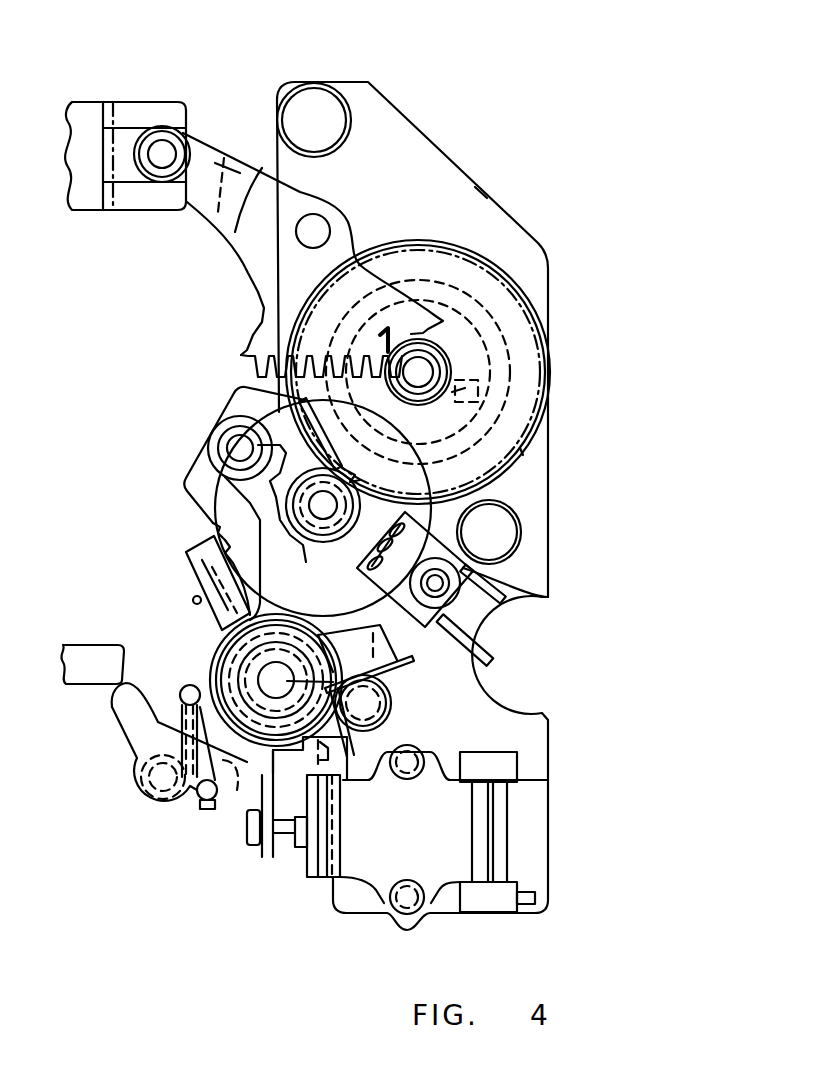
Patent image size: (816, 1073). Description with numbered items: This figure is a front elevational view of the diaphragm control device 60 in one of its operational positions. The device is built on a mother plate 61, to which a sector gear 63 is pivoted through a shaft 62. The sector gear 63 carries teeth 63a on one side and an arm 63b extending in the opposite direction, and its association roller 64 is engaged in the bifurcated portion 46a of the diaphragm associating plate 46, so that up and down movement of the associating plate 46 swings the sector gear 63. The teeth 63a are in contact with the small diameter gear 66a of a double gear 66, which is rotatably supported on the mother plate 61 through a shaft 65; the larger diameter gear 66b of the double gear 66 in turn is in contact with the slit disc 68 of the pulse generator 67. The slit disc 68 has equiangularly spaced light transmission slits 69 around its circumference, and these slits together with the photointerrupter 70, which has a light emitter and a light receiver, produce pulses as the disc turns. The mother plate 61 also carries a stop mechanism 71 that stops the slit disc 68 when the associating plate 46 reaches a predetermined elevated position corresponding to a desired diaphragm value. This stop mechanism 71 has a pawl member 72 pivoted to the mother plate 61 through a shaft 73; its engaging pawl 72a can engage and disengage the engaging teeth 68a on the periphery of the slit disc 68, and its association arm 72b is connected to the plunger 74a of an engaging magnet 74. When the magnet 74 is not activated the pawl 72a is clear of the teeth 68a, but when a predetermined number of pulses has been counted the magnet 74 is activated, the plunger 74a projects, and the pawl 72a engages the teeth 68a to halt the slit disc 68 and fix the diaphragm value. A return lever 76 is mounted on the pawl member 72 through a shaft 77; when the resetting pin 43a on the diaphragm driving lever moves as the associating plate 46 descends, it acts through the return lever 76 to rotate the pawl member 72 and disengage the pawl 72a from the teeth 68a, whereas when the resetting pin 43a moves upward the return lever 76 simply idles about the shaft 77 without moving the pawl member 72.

The diaphragm control mechanism resetting pin 43a is at (77, 641).
The diaphragm associating plate 46 is at (85, 210).
The bifurcated portion 46a is at (158, 202).
The diaphragm control device 60 is at (468, 148).
The mother plate 61 is at (487, 198).
The shaft 62 is at (318, 231).
The sector gear 63 is at (298, 277).
The teeth 63a is at (258, 373).
The arm 63b is at (213, 162).
The association roller 64 is at (150, 172).
The shaft 65 is at (427, 372).
The double gear 66 is at (523, 280).
The small diameter gear 66a is at (438, 340).
The larger diameter gear 66b is at (523, 455).
The pulse generator 67 is at (203, 516).
The slit disc 68 is at (423, 470).
The engaging teeth 68a is at (213, 517).
The light transmission slits 69 is at (363, 573).
The photointerrupter 70 is at (547, 597).
The stop mechanism 71 is at (197, 657).
The pawl member 72 is at (195, 601).
The engaging pawl 72a is at (200, 554).
The association arm 72b is at (262, 843).
The shaft 73 is at (372, 702).
The engaging magnet 74 is at (443, 821).
The plunger 74a is at (290, 833).
The return lever 76 is at (122, 705).
The shaft 77 is at (157, 808).